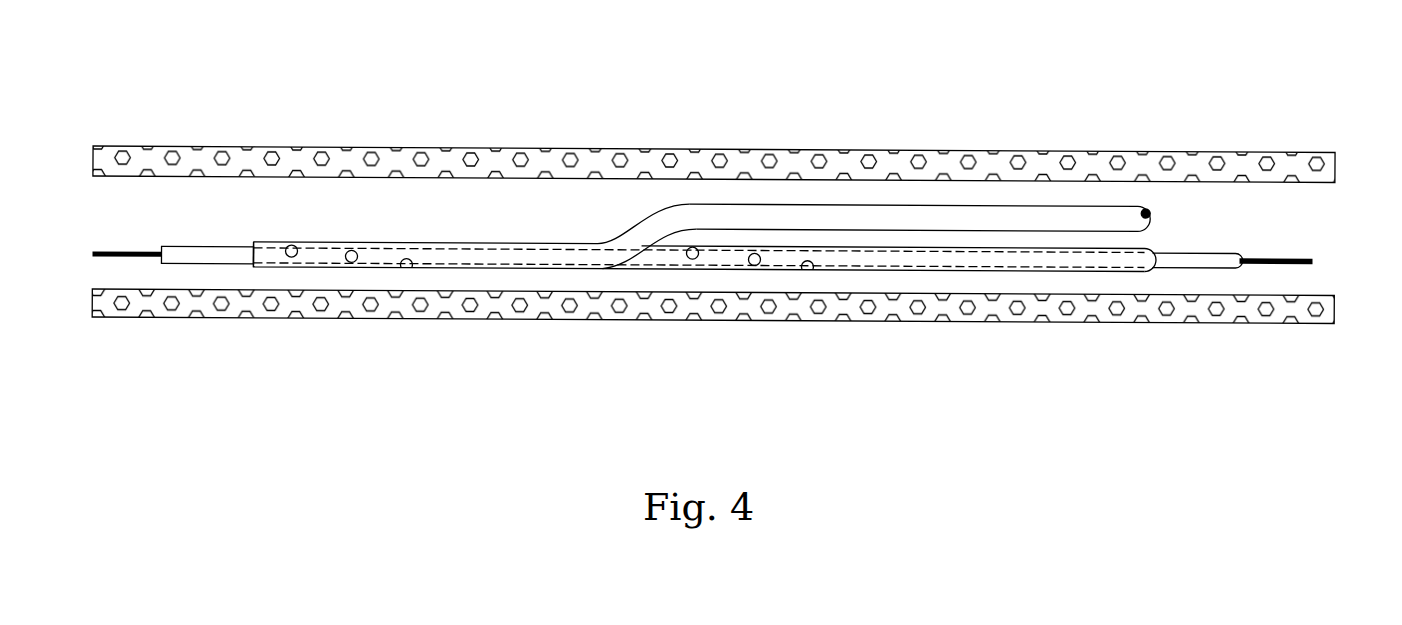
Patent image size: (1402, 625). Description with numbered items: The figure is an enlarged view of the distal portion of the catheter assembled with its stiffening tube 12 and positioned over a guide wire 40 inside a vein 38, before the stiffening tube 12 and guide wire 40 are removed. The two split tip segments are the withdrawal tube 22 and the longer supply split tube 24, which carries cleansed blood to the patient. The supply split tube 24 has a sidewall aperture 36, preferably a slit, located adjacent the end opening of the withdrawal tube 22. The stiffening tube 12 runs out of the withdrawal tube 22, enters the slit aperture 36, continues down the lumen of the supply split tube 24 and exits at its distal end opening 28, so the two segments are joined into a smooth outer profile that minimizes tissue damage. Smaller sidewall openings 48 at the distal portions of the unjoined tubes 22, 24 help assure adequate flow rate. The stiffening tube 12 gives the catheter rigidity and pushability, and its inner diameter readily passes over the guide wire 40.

The stiffening tube 12 is at (203, 264).
The withdrawal tube 22 is at (878, 272).
The supply split tube 24 is at (798, 203).
The distal end opening 28 is at (253, 240).
The sidewall aperture 36 is at (628, 262).
The vein 38 is at (1055, 162).
The guide wire 40 is at (92, 255).
The sidewall openings 48 is at (295, 242).